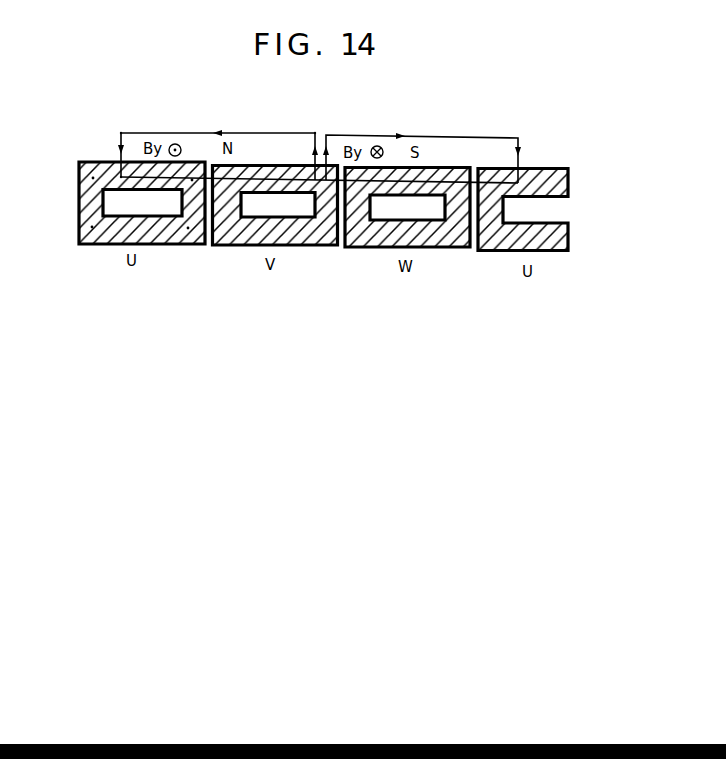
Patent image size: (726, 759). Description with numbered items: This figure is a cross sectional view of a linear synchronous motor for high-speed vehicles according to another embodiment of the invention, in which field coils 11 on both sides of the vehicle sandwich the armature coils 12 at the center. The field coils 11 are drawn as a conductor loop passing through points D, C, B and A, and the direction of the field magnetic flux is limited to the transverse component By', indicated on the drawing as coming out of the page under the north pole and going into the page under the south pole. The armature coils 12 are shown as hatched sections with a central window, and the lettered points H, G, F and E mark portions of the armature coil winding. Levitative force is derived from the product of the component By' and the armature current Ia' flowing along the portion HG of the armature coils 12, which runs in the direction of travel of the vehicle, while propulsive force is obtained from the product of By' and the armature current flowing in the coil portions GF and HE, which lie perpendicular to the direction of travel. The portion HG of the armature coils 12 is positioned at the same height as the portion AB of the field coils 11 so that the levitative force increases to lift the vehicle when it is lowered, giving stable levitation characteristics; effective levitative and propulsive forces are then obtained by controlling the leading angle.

The field coils 11 is at (350, 135).
The armature coils 12 is at (182, 245).
The point A of field coil portion AB A is at (113, 179).
The point B of field coil portion AB B is at (321, 186).
The point C of the field coils C is at (312, 125).
The point D of the field coils D is at (122, 124).
The point E of armature coil portion HE E is at (99, 232).
The point F of armature coil portion GF F is at (181, 232).
The point G of armature coil portion HG G is at (192, 166).
The point H of armature coil portion HG H is at (77, 177).